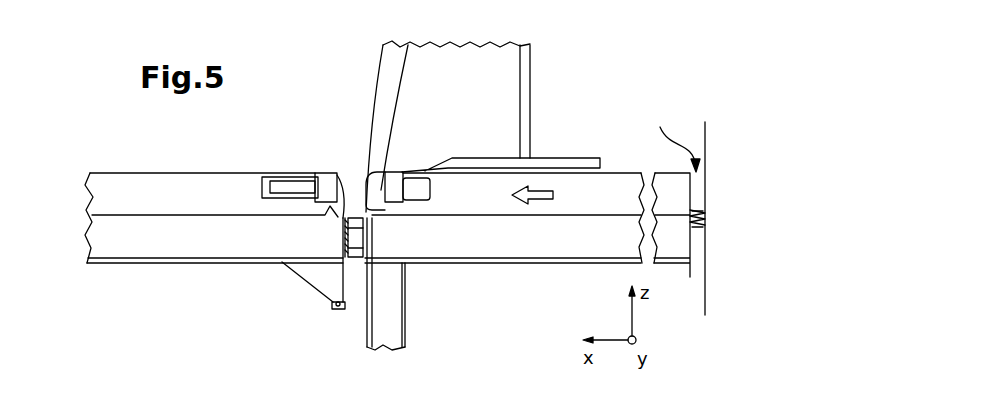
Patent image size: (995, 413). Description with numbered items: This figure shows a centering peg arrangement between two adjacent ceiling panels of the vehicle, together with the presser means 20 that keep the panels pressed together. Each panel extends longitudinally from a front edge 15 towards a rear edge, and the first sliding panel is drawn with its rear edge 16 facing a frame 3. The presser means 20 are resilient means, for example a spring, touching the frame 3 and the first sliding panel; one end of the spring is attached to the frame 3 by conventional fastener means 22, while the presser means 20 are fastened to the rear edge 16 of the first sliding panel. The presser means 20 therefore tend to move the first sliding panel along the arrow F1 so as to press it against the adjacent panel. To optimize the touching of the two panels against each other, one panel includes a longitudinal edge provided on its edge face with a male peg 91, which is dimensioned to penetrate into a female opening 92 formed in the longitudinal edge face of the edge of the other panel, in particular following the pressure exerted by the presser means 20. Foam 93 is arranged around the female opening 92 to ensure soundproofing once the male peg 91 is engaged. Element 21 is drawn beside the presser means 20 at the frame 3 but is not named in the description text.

The front edge 15 is at (365, 203).
The rear edge 16 is at (307, 172).
The foam 93 is at (325, 173).
The female opening 92 is at (287, 190).
The male peg 91 is at (390, 193).
The presser means 20 is at (674, 136).
The sealing lip 21 is at (693, 213).
The fastener means 22 is at (707, 217).
The frame 3 is at (707, 138).
The arrow F1 is at (538, 188).